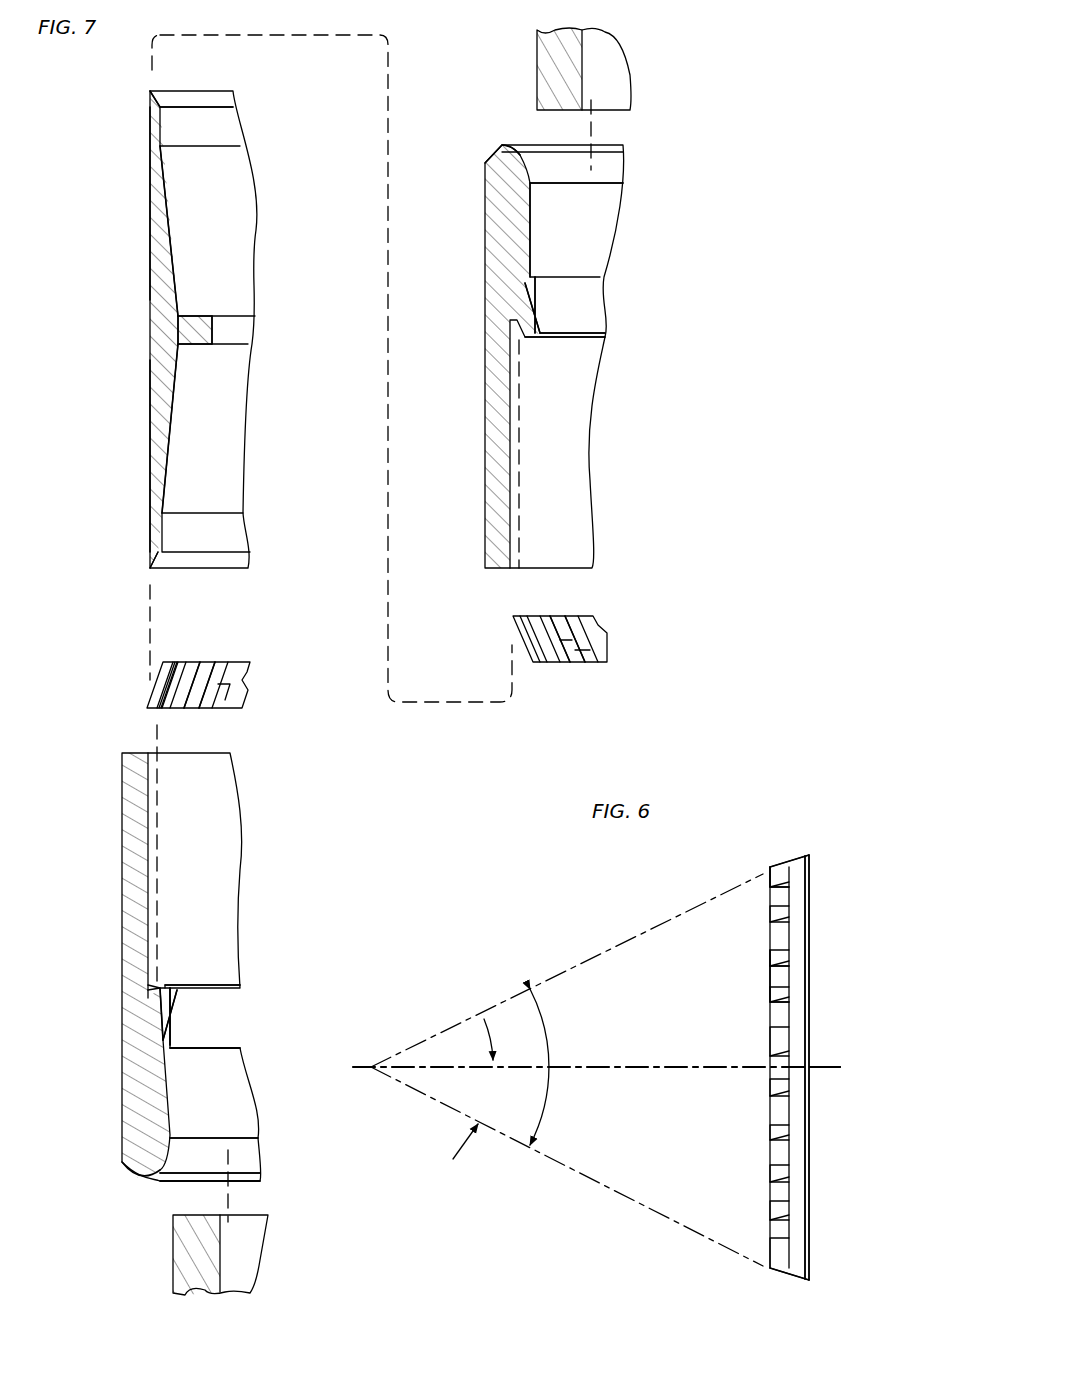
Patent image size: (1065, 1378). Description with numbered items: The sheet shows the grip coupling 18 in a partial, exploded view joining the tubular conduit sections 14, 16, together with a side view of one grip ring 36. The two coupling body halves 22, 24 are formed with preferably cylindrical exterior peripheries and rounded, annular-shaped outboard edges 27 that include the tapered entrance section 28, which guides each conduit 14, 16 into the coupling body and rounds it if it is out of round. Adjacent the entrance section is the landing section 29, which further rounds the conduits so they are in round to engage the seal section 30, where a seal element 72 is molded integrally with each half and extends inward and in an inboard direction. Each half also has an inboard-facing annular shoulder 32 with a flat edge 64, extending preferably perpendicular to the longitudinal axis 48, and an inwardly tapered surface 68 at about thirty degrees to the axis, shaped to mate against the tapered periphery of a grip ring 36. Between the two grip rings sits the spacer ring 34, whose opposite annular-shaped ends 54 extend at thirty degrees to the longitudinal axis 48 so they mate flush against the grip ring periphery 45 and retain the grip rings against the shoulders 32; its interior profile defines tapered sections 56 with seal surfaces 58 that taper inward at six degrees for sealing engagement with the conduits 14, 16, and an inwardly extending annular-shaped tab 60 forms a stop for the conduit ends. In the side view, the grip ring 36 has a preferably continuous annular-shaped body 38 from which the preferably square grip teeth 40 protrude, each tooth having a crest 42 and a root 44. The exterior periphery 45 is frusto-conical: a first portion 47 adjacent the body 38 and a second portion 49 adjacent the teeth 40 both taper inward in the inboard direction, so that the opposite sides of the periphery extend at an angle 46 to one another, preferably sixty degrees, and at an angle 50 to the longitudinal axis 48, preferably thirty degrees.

In FIG. 7, the tubular conduit 14 is at (542, 56).
In FIG. 7, the tubular conduit 16 is at (182, 1253).
In FIG. 7, the grip coupling 18 is at (97, 135).
In FIG. 7, the coupling body half 22 is at (496, 405).
In FIG. 7, the coupling body half 24 is at (132, 1098).
In FIG. 7, the outboard edge 27 is at (500, 143).
In FIG. 7, the tapered entrance section 28 is at (538, 177).
In FIG. 7, the landing section 29 is at (538, 262).
In FIG. 7, the seal section 30 is at (560, 310).
In FIG. 7, the annular shoulder 32 is at (525, 328).
In FIG. 7, the spacer ring 34 is at (147, 318).
In FIG. 7, the grip ring 36 is at (146, 697).
In FIG. 6, the grip ring 36 is at (814, 889).
In FIG. 6, the annular-shaped body 38 is at (806, 1035).
In FIG. 7, the grip teeth 40 is at (213, 668).
In FIG. 6, the grip teeth 40 is at (776, 944).
In FIG. 6, the crest 42 is at (773, 992).
In FIG. 6, the root 44 is at (774, 970).
In FIG. 6, the exterior periphery 45 is at (785, 1266).
In FIG. 6, the angle 46 is at (544, 1067).
In FIG. 6, the first portion of periphery 47 is at (790, 858).
In FIG. 6, the longitudinal axis 48 is at (826, 1071).
In FIG. 6, the second portion of periphery 49 is at (773, 864).
In FIG. 6, the angle 50 is at (477, 1089).
In FIG. 7, the annular-shaped end 54 is at (160, 99).
In FIG. 7, the tapered section 56 is at (152, 213).
In FIG. 7, the seal surface 58 is at (178, 254).
In FIG. 7, the annular-shaped tab 60 is at (193, 347).
In FIG. 7, the flat edge 64 is at (161, 1028).
In FIG. 7, the tapered surface 68 is at (160, 992).
In FIG. 7, the seal element 72 is at (560, 327).